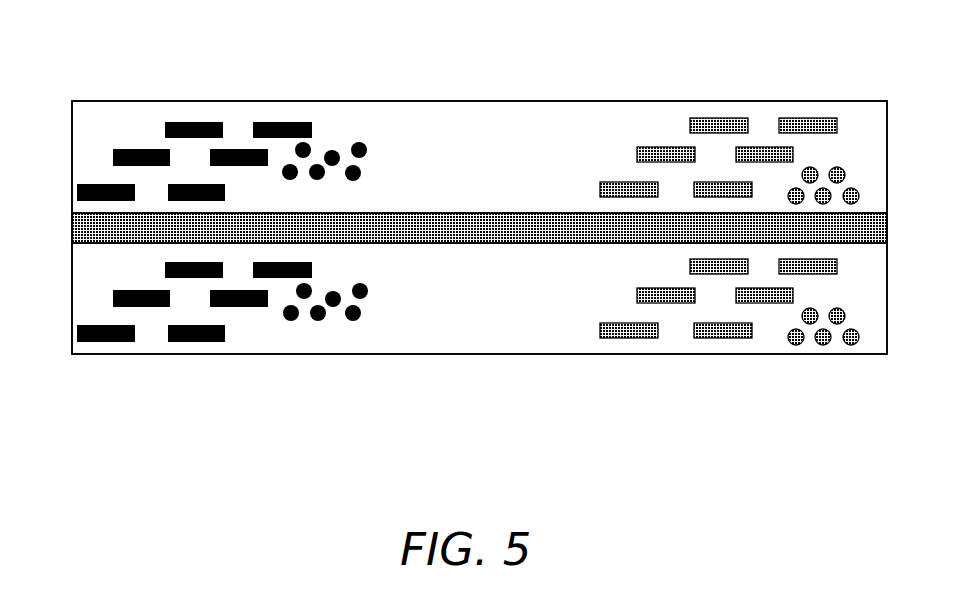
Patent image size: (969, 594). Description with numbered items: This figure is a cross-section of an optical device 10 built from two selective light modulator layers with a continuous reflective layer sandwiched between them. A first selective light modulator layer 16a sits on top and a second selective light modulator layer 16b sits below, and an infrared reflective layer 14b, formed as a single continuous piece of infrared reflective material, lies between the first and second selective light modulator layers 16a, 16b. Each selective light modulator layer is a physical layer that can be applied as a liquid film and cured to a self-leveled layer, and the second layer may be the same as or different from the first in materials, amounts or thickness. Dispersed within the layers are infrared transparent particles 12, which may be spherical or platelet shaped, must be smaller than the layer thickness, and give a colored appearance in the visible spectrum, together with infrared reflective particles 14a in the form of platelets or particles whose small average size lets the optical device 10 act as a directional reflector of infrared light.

The optical device 10 is at (71, 70).
The infrared transparent particles 12 is at (310, 177).
The infrared reflective particles 14a is at (815, 198).
The infrared reflective layer 14b is at (72, 245).
The first selective light modulator layer 16a is at (540, 100).
The second selective light modulator layer 16b is at (480, 354).